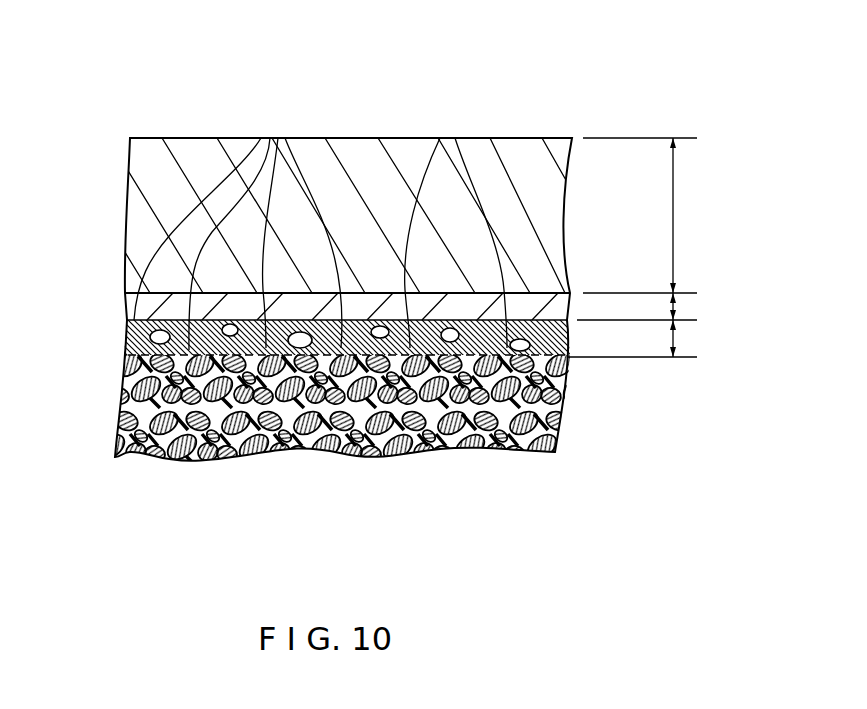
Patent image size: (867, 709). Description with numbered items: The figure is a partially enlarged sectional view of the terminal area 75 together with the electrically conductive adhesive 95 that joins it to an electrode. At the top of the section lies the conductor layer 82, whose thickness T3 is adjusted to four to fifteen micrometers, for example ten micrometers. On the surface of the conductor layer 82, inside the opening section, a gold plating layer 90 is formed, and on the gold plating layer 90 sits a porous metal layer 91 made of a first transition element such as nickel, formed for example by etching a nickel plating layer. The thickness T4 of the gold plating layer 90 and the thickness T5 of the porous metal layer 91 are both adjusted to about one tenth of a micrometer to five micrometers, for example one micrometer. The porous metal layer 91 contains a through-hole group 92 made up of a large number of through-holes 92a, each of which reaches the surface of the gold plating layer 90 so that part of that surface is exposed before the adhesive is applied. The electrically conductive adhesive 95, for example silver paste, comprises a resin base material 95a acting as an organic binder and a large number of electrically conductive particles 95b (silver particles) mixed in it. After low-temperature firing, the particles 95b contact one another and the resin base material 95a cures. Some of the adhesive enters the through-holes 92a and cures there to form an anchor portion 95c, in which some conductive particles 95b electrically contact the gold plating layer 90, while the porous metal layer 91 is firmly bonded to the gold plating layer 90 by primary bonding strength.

The terminal area 75 is at (527, 66).
The conductor layer 82 is at (537, 153).
The gold plating layer 90 is at (562, 302).
The porous metal layer 91 is at (565, 345).
The through-hole group 92 is at (480, 72).
The through-hole 92a is at (285, 138).
The electrically conductive adhesive 95 is at (379, 450).
The resin base material 95a is at (512, 453).
The electrically conductive particles 95b is at (558, 438).
The anchor portion 95c is at (565, 325).
The thickness of conductor layer T3 is at (676, 218).
The thickness of gold plating layer T4 is at (676, 312).
The thickness of porous metal layer T5 is at (676, 348).